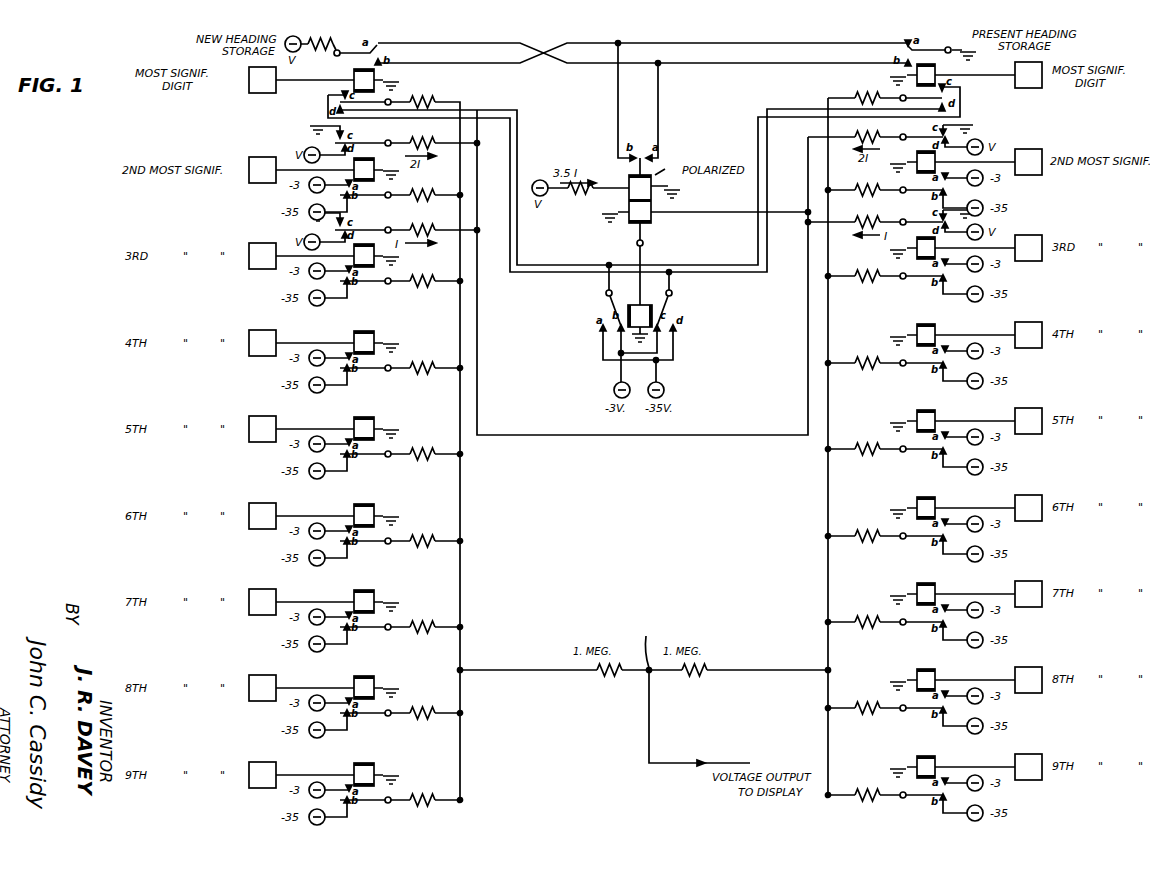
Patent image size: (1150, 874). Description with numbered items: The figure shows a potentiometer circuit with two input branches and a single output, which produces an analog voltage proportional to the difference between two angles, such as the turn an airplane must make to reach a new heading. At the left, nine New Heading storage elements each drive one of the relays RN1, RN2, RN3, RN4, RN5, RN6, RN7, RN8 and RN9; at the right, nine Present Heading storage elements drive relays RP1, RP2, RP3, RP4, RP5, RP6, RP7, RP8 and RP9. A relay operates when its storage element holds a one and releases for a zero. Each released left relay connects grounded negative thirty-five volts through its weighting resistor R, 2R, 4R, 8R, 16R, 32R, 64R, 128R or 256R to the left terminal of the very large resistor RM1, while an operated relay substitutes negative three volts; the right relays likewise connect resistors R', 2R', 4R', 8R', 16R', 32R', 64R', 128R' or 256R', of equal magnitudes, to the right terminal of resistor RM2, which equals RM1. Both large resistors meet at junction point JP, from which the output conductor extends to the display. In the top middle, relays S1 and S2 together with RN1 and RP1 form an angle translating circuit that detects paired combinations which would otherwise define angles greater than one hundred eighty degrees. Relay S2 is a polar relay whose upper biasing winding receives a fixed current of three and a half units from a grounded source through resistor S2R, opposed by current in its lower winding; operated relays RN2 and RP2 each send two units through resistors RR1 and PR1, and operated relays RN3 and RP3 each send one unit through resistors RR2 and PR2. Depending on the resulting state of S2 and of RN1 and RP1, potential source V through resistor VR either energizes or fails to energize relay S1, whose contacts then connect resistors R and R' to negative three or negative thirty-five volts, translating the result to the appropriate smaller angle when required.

The resistor VR is at (319, 55).
The resistor R is at (422, 92).
The resistor RR1 is at (406, 134).
The resistor RR2 is at (413, 221).
The resistor 2R is at (422, 184).
The resistor 4R is at (422, 270).
The resistor 8R is at (422, 357).
The resistor 16R is at (425, 443).
The resistor 32R is at (425, 530).
The resistor 64R is at (425, 616).
The resistor 128R is at (427, 702).
The resistor 256R is at (427, 789).
The resistor R' is at (867, 85).
The resistor PR1 is at (883, 128).
The resistor PR2 is at (866, 213).
The resistor 2R' is at (864, 178).
The resistor 4R' is at (863, 264).
The resistor 8R' is at (862, 351).
The resistor 16R' is at (860, 437).
The resistor 32R' is at (860, 524).
The resistor 64R' is at (860, 610).
The resistor 128R' is at (860, 696).
The resistor 256R' is at (860, 783).
The relay RN1 is at (364, 80).
The relay RN2 is at (364, 169).
The relay RN3 is at (364, 255).
The relay RN4 is at (364, 342).
The relay RN5 is at (364, 428).
The relay RN6 is at (364, 515).
The relay RN7 is at (364, 601).
The relay RN8 is at (364, 687).
The relay RN9 is at (364, 774).
The relay RP1 is at (926, 75).
The relay RP2 is at (926, 162).
The relay RP3 is at (926, 248).
The relay RP4 is at (926, 335).
The relay RP5 is at (926, 421).
The relay RP6 is at (926, 508).
The relay RP7 is at (926, 594).
The relay RP8 is at (926, 680).
The relay RP9 is at (926, 767).
The relay S1 is at (640, 316).
The polar relay S2 is at (640, 199).
The resistor S2R is at (579, 198).
The resistor RM1 is at (615, 683).
The resistor RM2 is at (701, 683).
The junction point JP is at (644, 643).